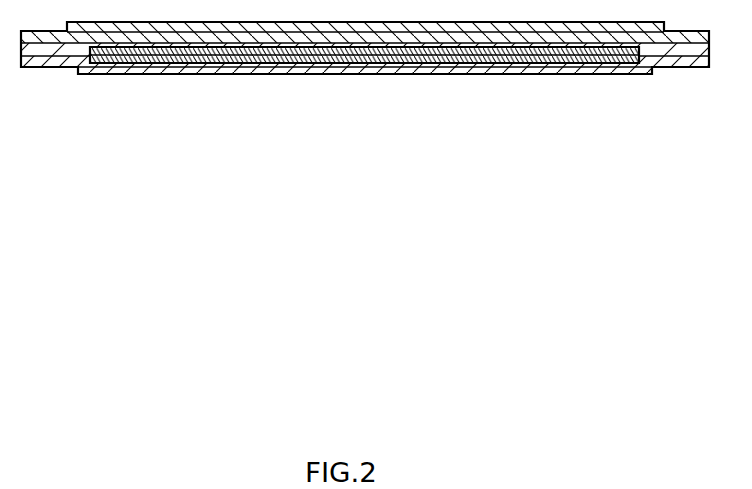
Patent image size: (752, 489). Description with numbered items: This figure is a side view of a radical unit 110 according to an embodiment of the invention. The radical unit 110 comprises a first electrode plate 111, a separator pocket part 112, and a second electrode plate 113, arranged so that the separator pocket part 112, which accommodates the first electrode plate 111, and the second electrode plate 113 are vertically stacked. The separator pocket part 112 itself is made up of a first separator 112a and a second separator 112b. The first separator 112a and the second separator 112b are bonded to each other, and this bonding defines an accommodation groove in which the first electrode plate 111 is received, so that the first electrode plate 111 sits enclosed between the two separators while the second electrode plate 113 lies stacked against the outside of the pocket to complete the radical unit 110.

The radical unit 110 is at (365, 160).
The first electrode plate 111 is at (537, 205).
The separator pocket part 112 is at (365, 119).
The first separator 112a is at (472, 38).
The second separator 112b is at (470, 143).
The second electrode plate 113 is at (167, 23).